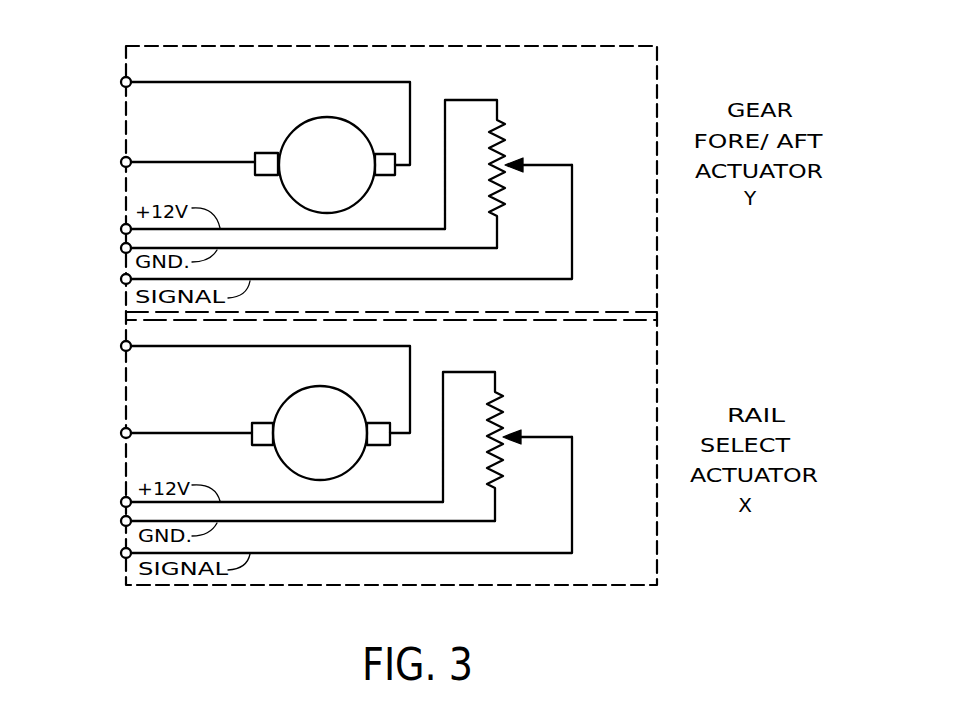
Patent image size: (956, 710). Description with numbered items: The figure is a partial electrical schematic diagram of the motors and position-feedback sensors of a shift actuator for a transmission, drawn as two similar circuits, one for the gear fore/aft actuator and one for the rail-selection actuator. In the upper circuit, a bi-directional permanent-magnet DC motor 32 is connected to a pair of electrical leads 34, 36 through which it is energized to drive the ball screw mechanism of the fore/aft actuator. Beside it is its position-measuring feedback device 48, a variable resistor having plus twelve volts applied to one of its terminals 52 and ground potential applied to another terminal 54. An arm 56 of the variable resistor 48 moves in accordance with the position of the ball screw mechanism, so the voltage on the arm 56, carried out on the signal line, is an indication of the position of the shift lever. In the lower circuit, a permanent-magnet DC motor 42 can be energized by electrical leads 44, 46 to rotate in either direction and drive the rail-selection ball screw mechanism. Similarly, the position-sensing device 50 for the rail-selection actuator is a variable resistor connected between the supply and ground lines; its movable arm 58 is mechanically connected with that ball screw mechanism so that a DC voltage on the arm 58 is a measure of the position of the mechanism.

The permanent-magnet DC motor 32 is at (297, 127).
The electrical lead 34 is at (217, 160).
The electrical lead 36 is at (218, 84).
The permanent-magnet DC motor 42 is at (294, 394).
The electrical lead 44 is at (218, 431).
The electrical lead 46 is at (217, 348).
The position-measuring feedback device 48 is at (548, 150).
The position-sensing device 50 is at (548, 416).
The terminal 52 is at (482, 100).
The terminal 54 is at (498, 229).
The arm 56 is at (572, 245).
The movable arm 58 is at (572, 520).